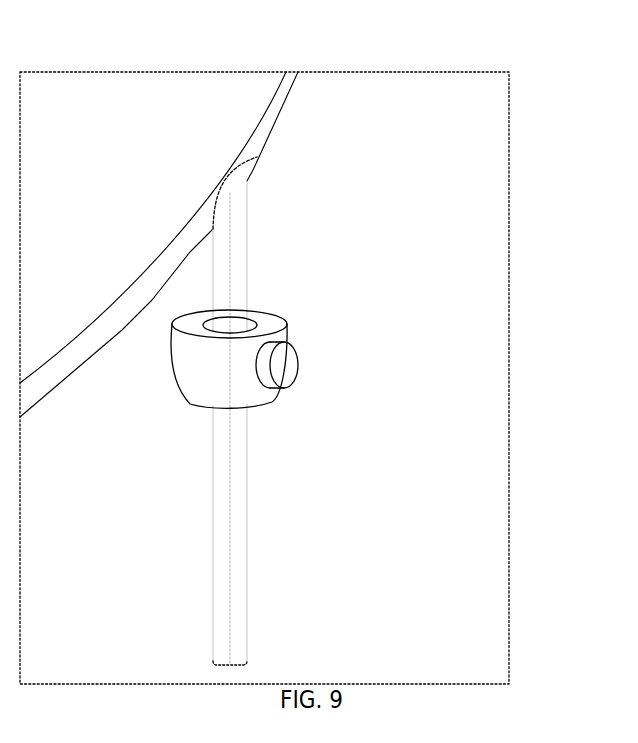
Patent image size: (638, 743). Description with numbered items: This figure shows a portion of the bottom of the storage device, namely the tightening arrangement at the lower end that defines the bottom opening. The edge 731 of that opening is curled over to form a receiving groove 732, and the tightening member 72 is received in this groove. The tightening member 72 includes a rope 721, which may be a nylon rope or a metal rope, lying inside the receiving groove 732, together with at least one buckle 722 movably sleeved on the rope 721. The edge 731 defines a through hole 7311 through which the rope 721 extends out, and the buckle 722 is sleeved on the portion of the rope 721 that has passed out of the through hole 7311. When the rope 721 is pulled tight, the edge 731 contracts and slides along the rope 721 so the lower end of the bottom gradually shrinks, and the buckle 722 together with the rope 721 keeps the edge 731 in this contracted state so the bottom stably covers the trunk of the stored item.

The tightening member 72 is at (230, 555).
The rope 721 is at (247, 475).
The buckle 722 is at (279, 362).
The edge 731 is at (163, 285).
The through hole 7311 is at (232, 175).
The receiving groove 732 is at (239, 187).